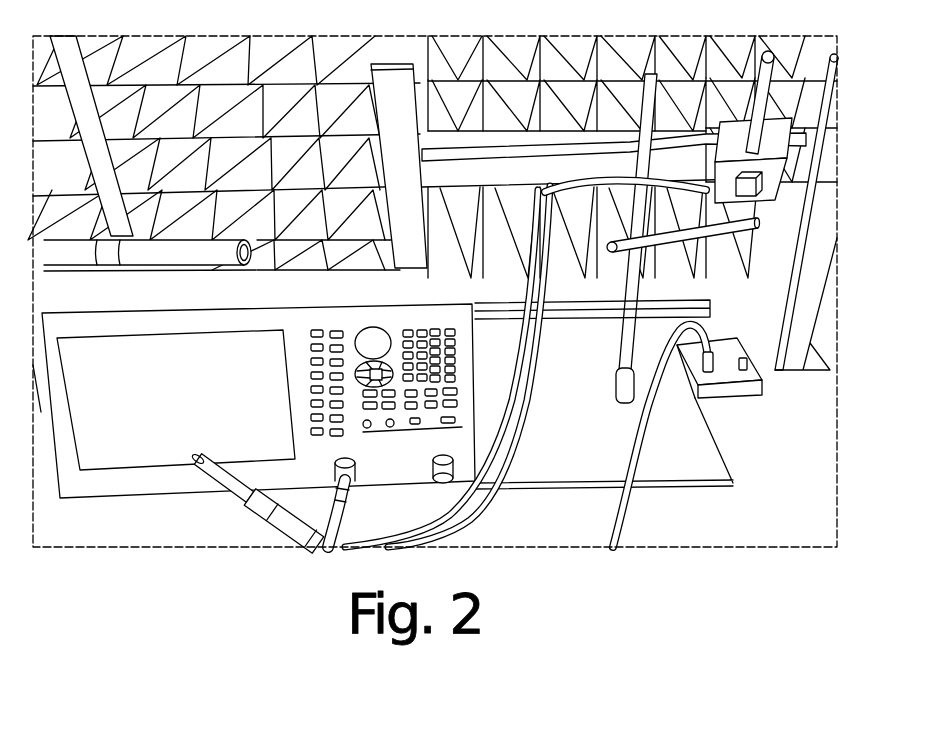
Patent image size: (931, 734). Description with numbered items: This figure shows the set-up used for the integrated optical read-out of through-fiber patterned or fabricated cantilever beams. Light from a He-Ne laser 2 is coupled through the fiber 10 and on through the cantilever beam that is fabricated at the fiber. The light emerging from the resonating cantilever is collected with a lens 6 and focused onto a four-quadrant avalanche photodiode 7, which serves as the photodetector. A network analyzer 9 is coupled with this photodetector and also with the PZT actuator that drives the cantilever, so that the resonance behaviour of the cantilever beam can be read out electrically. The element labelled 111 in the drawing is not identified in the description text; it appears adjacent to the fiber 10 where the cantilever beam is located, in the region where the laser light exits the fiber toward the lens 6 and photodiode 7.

The He-Ne laser 2 is at (148, 240).
The lens 6 is at (681, 241).
The 4-quadrant avalanche photodiode 7 is at (689, 434).
The network analyzer 9 is at (266, 400).
The fiber 10 is at (756, 125).
The antenna rod 111 is at (744, 102).